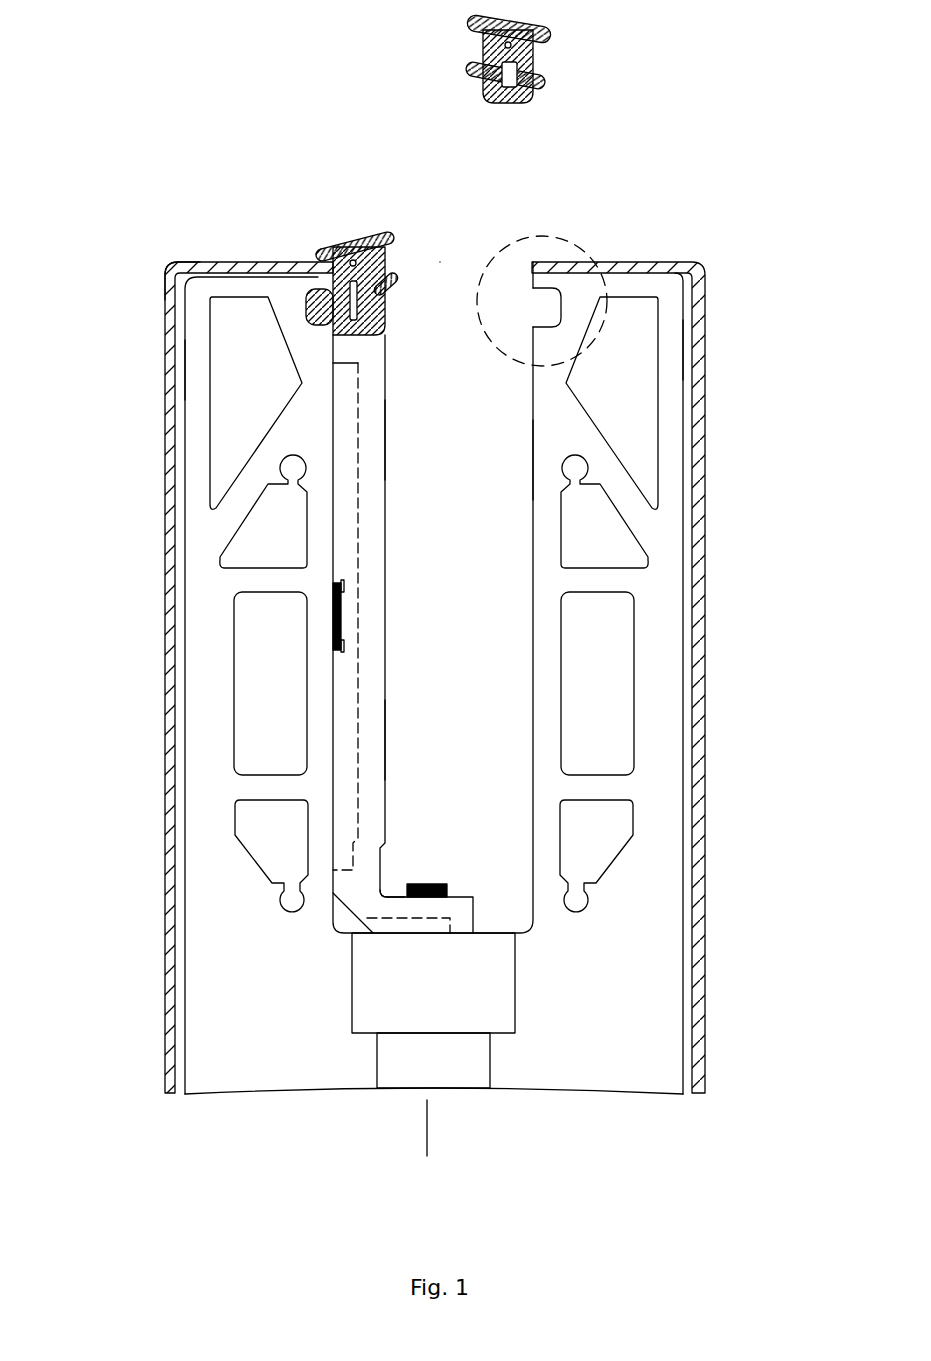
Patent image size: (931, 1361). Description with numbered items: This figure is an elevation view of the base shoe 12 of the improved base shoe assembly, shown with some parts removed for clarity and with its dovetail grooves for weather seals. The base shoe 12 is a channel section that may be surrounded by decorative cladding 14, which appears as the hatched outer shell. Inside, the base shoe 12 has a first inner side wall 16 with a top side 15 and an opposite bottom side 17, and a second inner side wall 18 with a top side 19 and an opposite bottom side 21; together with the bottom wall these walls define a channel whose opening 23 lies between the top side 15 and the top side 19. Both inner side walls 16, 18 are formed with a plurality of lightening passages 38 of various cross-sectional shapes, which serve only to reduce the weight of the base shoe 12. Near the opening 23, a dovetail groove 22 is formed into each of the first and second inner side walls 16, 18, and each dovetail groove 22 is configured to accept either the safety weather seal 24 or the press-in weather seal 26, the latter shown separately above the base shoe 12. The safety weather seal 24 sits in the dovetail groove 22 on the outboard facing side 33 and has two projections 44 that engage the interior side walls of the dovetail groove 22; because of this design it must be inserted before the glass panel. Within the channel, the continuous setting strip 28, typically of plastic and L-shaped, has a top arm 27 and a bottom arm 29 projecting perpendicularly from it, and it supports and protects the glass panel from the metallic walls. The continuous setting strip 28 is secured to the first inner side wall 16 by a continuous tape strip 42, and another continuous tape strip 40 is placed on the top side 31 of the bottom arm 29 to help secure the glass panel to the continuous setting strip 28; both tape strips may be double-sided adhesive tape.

The base shoe 12 is at (268, 1095).
The decorative cladding 14 is at (706, 1032).
The top side 15 is at (193, 361).
The first inner side wall 16 is at (330, 690).
The bottom side 17 is at (228, 967).
The second inner side wall 18 is at (535, 458).
The top side 19 is at (682, 299).
The bottom side 21 is at (668, 915).
The dovetail groove 22 is at (298, 300).
The opening 23 is at (459, 229).
The safety weather seal 24 is at (365, 238).
The press-in weather seal 26 is at (535, 66).
The top arm 27 is at (378, 436).
The continuous setting strip 28 is at (378, 745).
The bottom arm 29 is at (457, 897).
The top side 31 is at (391, 886).
The outboard facing side 33 is at (118, 251).
The lightening passages 38 is at (610, 705).
The continuous tape strip 40 is at (427, 902).
The continuous tape strip 42 is at (326, 613).
The projections 44 is at (322, 245).